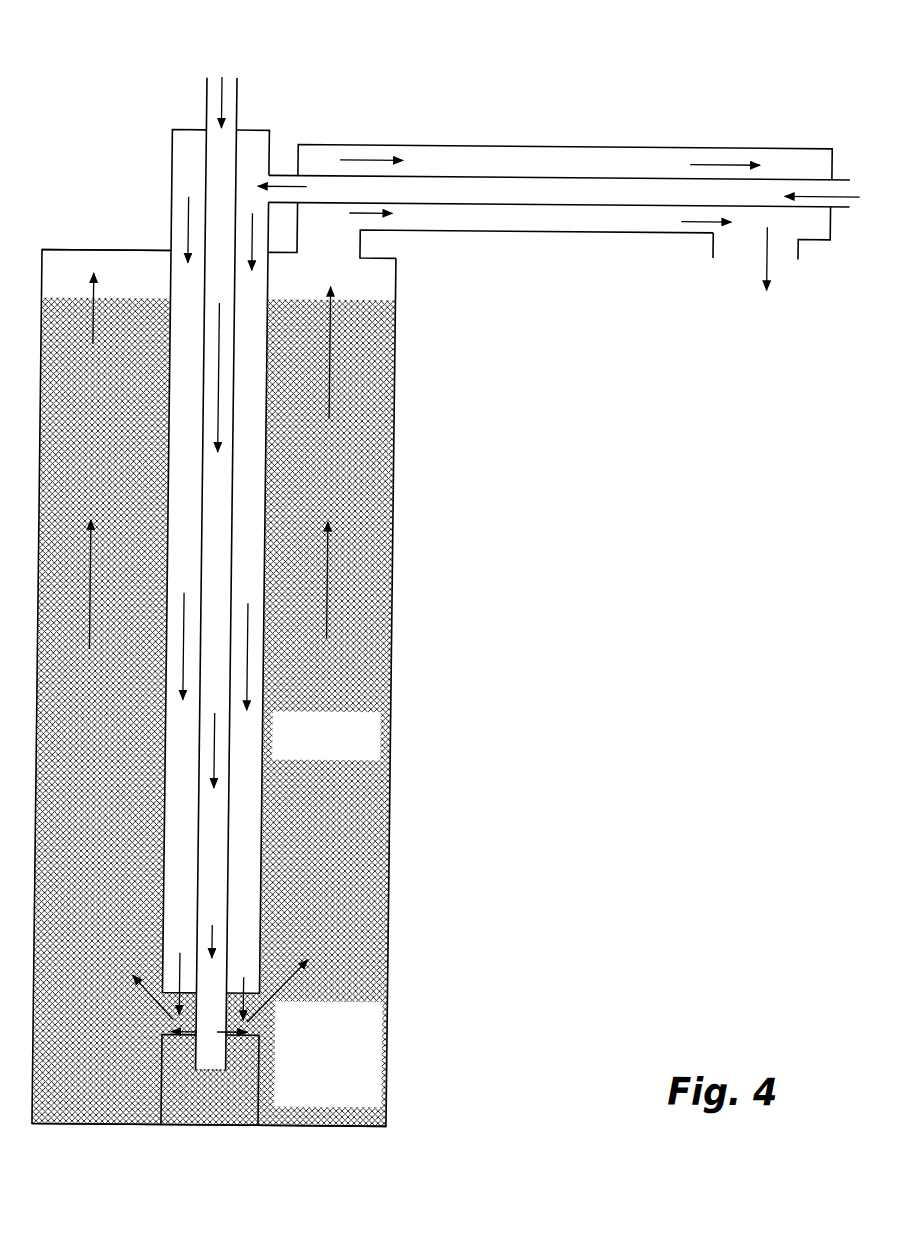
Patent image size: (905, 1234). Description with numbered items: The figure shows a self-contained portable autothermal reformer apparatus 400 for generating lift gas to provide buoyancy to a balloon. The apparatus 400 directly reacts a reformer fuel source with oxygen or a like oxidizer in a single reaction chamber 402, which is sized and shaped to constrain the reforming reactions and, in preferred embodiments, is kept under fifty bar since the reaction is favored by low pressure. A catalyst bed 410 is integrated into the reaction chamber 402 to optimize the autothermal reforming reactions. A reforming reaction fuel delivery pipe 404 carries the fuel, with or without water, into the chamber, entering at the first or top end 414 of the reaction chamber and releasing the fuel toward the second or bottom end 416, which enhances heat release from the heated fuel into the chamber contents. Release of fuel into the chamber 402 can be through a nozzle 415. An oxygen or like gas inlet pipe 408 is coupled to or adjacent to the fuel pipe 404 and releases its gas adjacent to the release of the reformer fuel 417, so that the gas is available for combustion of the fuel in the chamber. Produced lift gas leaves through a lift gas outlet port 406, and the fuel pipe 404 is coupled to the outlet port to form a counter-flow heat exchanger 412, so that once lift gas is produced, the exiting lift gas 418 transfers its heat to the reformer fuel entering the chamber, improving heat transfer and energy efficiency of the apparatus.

The autothermal reformer apparatus 400 is at (728, 124).
The reaction chamber 402 is at (408, 529).
The reforming reaction fuel delivery pipe 404 is at (279, 177).
The lift gas outlet port 406 is at (796, 255).
The gas inlet pipe 408 is at (234, 117).
The catalyst bed 410 is at (352, 737).
The counter-flow heat exchanger 412 is at (448, 138).
The first end of the reaction chamber 414 is at (88, 251).
The nozzle 415 is at (198, 1045).
The second end of the reaction chamber 416 is at (368, 1125).
The release of the reformer fuel 417 is at (172, 1025).
The exiting lift gas 418 is at (759, 243).